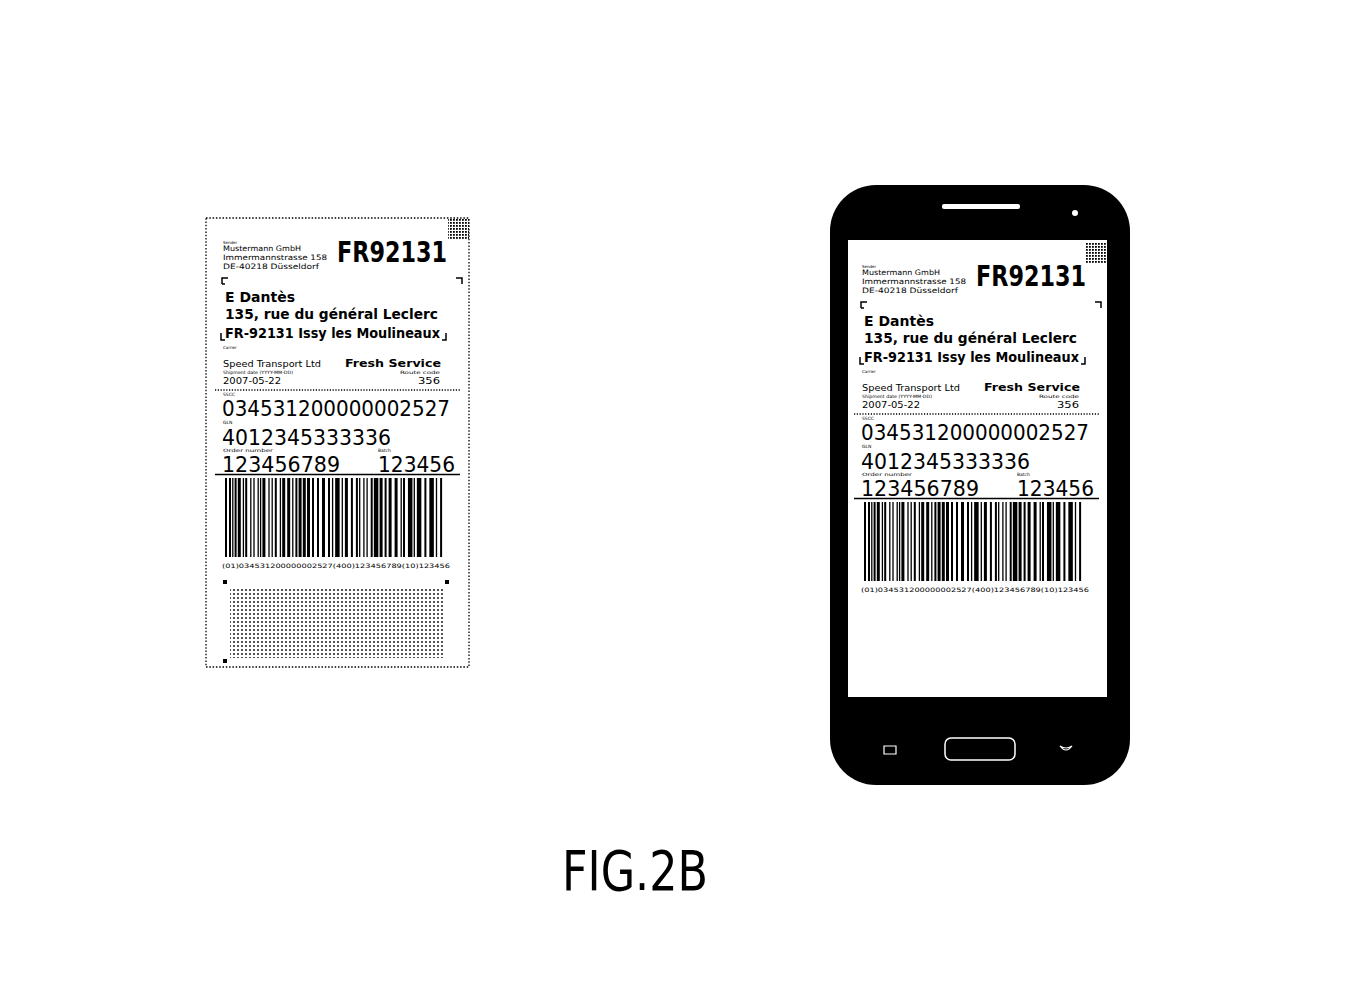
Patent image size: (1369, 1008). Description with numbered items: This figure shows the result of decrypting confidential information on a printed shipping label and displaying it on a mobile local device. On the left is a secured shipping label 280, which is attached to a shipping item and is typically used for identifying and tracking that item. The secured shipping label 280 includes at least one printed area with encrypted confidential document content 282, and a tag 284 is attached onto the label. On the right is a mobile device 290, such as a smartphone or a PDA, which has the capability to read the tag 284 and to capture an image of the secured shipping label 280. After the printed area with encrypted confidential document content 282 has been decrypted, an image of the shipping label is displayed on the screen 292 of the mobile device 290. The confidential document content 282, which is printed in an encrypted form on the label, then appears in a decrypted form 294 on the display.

The secured shipping label 280 is at (204, 211).
The printed area with encrypted confidential document content 282 is at (326, 644).
The tag 284 is at (462, 219).
The mobile device 290 is at (864, 183).
The screen 292 is at (1097, 395).
The decrypted form 294 is at (1048, 663).